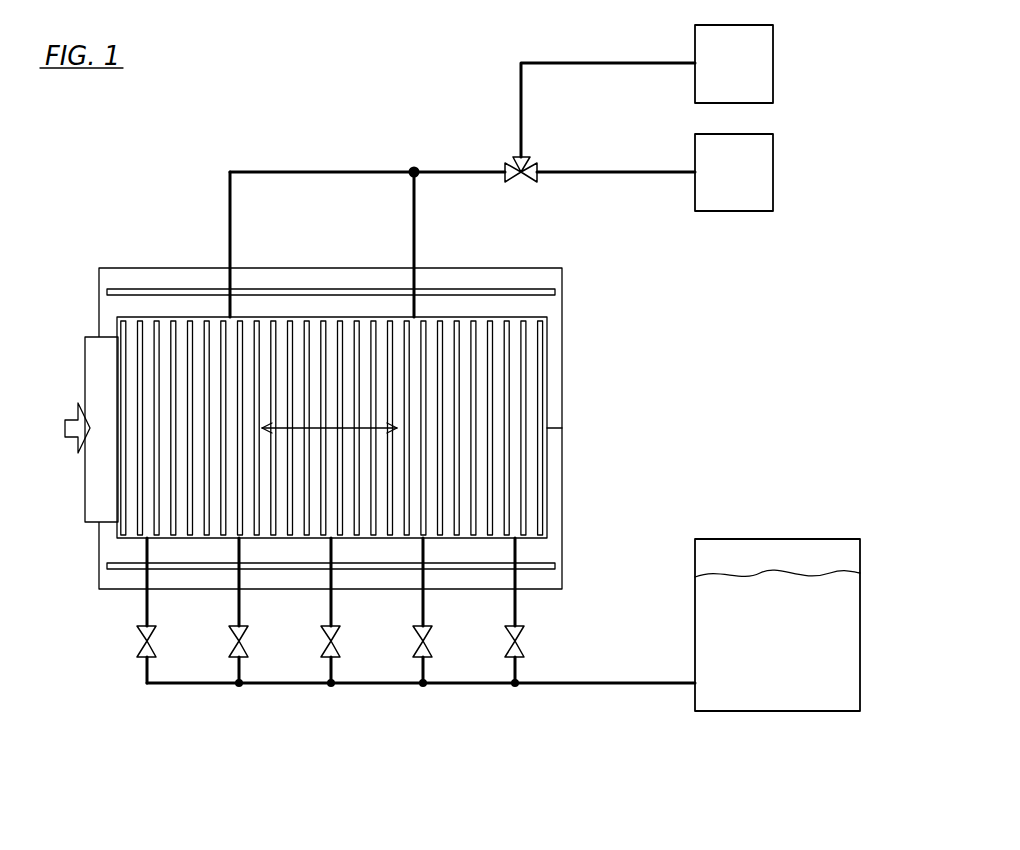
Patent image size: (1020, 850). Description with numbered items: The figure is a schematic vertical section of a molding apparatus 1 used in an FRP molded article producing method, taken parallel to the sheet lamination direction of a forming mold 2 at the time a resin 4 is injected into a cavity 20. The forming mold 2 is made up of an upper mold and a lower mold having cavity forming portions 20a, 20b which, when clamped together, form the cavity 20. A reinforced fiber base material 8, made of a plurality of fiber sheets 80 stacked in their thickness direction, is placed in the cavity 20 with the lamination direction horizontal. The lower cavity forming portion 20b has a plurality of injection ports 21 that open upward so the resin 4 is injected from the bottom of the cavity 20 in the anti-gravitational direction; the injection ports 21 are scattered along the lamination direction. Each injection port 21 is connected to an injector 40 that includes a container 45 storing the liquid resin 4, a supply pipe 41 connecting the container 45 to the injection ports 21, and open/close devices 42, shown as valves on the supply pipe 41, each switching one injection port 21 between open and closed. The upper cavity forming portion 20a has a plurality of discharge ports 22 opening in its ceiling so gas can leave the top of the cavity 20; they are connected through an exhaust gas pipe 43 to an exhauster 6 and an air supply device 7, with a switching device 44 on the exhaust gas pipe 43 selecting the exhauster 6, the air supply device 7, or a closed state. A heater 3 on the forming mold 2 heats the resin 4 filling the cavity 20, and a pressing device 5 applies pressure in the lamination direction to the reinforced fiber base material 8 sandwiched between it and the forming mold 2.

The molding apparatus 1 is at (227, 118).
The forming mold 2 is at (592, 297).
The heater 3 is at (107, 292).
The resin 4 is at (787, 643).
The pressing device 5 is at (84, 398).
The exhauster 6 is at (773, 72).
The air supply device 7 is at (773, 183).
The reinforced fiber base material 8 is at (299, 320).
The cavity 20 is at (397, 375).
The cavity forming portion 20a is at (540, 348).
The cavity forming portion 20b is at (535, 535).
The injection port 21 is at (147, 540).
The discharge port 22 is at (230, 315).
The injector 40 is at (466, 681).
The supply pipe 41 is at (622, 686).
The open/close device 42 is at (138, 657).
The exhaust gas pipe 43 is at (521, 112).
The switching device 44 is at (535, 182).
The container 45 is at (777, 673).
The fiber sheet 80 is at (156, 320).